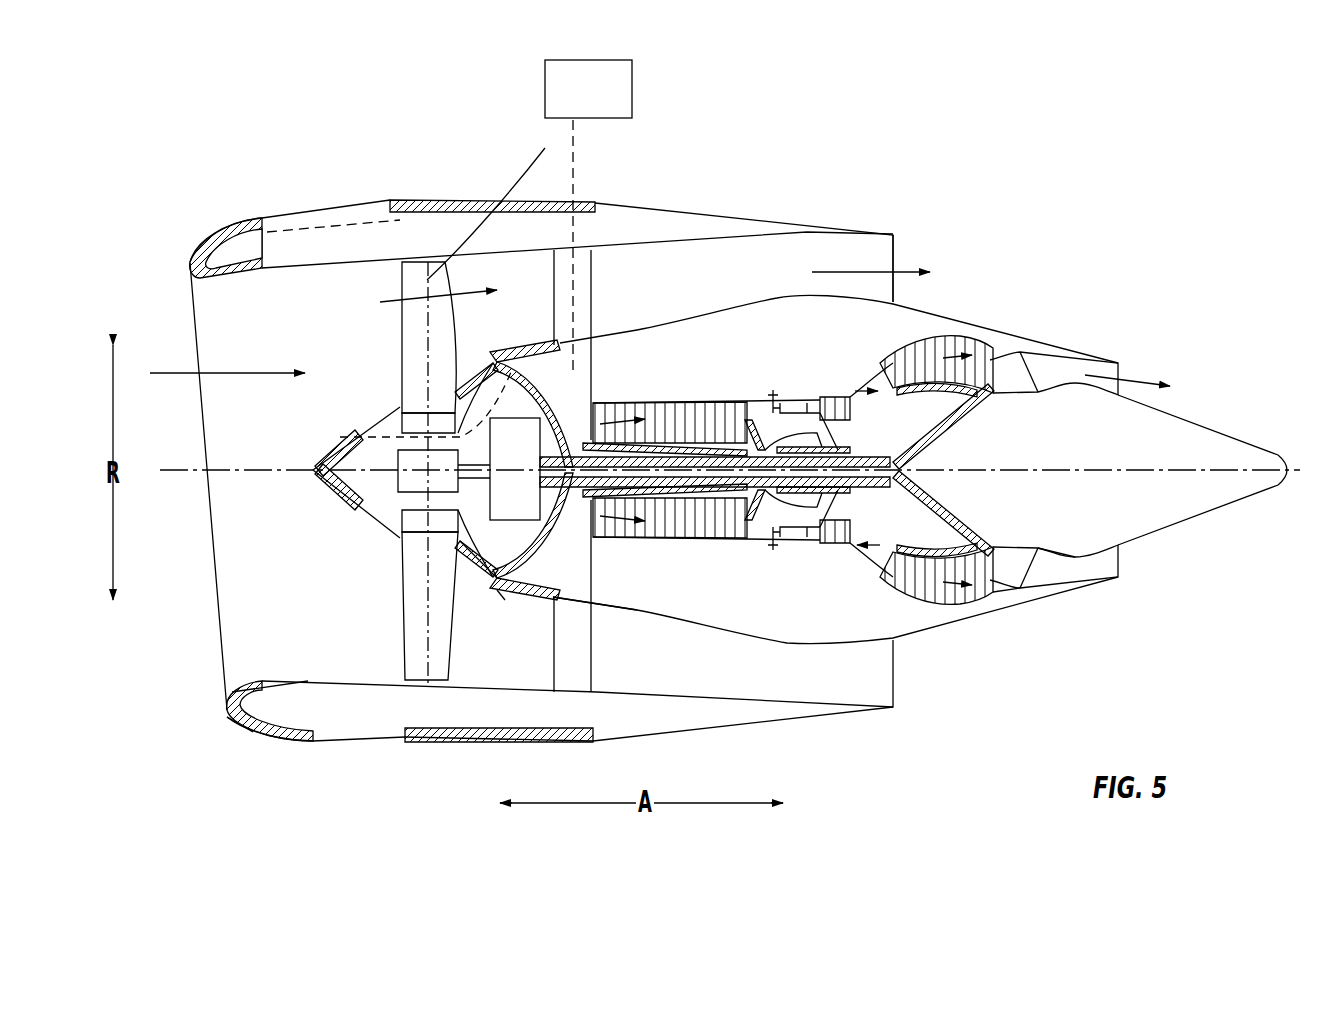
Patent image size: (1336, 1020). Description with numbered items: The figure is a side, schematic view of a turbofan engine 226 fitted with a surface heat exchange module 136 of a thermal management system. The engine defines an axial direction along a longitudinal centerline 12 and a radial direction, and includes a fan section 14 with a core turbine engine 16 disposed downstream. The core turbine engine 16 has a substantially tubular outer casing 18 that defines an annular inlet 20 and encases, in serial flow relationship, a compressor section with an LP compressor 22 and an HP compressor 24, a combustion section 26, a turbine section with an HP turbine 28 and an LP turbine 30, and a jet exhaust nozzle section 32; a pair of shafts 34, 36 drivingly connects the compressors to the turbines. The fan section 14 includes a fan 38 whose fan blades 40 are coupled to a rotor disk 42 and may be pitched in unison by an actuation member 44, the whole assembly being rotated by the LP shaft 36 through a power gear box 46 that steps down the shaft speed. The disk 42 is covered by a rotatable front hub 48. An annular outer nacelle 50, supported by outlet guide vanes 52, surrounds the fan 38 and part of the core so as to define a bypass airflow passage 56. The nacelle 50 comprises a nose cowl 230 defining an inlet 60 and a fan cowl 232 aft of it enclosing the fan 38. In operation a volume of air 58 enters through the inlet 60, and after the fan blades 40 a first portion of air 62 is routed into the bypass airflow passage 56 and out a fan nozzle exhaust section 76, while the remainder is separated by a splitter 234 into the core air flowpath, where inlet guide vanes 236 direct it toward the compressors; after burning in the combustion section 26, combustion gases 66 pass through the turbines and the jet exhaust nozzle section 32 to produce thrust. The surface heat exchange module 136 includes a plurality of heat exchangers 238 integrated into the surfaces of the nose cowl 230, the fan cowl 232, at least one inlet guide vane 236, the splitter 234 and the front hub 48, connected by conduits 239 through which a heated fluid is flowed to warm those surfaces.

The longitudinal centerline 12 is at (1058, 468).
The fan section 14 is at (360, 283).
The core turbine engine 16 is at (712, 353).
The outer casing 18 is at (748, 633).
The annular inlet 20 is at (483, 588).
The LP compressor 22 is at (560, 513).
The HP compressor 24 is at (623, 530).
The combustion section 26 is at (792, 553).
The HP turbine 28 is at (920, 533).
The LP turbine 30 is at (975, 595).
The jet exhaust nozzle section 32 is at (1037, 580).
The shaft 34 is at (785, 450).
The LP shaft 36 is at (935, 433).
The fan 38 is at (367, 521).
The fan blades 40 is at (400, 620).
The rotor disk 42 is at (420, 425).
The actuation member 44 is at (340, 437).
The power gear box 46 is at (580, 428).
The rotatable front hub 48 is at (300, 488).
The outer nacelle 50 is at (470, 775).
The outlet guide vanes 52 is at (593, 283).
The bypass airflow passage 56 is at (726, 291).
The volume of air 58 is at (240, 360).
The inlet 60 is at (220, 685).
The first portion of air 62 is at (855, 272).
The combustion gases 66 is at (935, 355).
The fan nozzle exhaust section 76 is at (880, 258).
The surface heat exchange module 136 is at (585, 50).
The turbofan engine 226 is at (1035, 213).
The nose cowl 230 is at (255, 753).
The fan cowl 232 is at (400, 805).
The splitter 234 is at (518, 606).
The inlet guide vanes 236 is at (482, 352).
The heat exchangers 238 is at (212, 242).
The conduits 239 is at (577, 152).